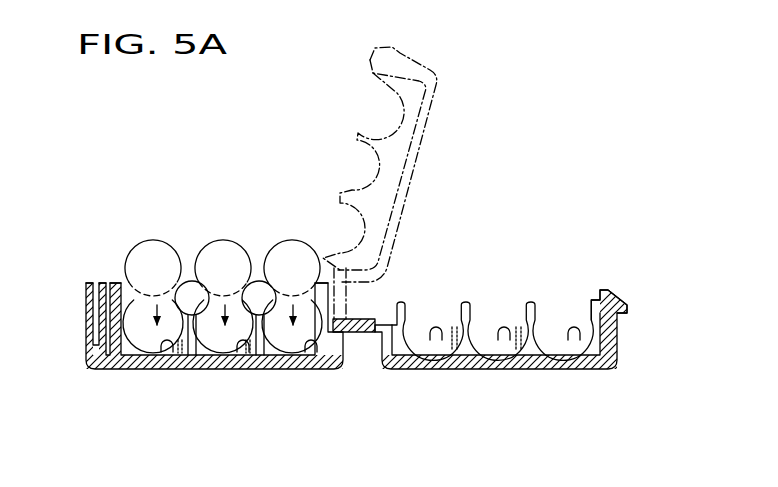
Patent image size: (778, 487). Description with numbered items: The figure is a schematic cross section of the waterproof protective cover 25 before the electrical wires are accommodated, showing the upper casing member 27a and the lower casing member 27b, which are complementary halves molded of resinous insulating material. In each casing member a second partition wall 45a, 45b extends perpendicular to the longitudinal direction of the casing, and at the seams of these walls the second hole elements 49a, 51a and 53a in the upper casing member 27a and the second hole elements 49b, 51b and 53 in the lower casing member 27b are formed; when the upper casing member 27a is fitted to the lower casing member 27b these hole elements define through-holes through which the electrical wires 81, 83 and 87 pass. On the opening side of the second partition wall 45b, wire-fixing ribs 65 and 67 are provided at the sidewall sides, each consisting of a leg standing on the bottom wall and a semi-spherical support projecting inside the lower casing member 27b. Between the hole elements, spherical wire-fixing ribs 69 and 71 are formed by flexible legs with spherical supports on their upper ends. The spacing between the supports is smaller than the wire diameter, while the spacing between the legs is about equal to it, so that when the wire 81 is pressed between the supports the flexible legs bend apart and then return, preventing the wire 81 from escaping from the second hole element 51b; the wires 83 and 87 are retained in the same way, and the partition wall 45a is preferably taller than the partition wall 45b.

The waterproof protective cover 25 is at (546, 186).
The upper casing member 27a is at (616, 357).
The lower casing member 27b is at (84, 364).
The second partition wall 45a is at (536, 330).
The second partition wall 45b is at (127, 345).
The second hole element 49a is at (425, 340).
The second hole element 49b is at (306, 346).
The second hole element 51a is at (497, 340).
The second hole element 51b is at (238, 346).
The receiving recess 53 is at (152, 358).
The second hole element 53a is at (562, 340).
The wire-fixing rib 65 is at (314, 276).
The wire-fixing rib 67 is at (122, 275).
The spherical wire-fixing rib 69 is at (258, 273).
The spherical wire-fixing rib 71 is at (190, 273).
The electrical wire 81 is at (210, 240).
The electrical wire 83 is at (273, 241).
The electrical wire 87 is at (147, 240).